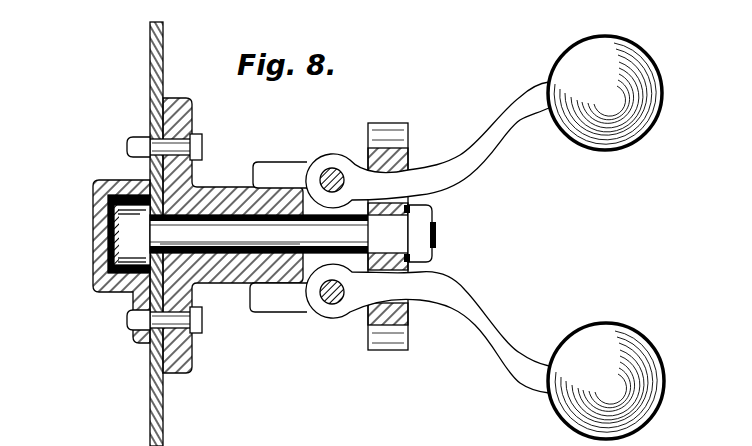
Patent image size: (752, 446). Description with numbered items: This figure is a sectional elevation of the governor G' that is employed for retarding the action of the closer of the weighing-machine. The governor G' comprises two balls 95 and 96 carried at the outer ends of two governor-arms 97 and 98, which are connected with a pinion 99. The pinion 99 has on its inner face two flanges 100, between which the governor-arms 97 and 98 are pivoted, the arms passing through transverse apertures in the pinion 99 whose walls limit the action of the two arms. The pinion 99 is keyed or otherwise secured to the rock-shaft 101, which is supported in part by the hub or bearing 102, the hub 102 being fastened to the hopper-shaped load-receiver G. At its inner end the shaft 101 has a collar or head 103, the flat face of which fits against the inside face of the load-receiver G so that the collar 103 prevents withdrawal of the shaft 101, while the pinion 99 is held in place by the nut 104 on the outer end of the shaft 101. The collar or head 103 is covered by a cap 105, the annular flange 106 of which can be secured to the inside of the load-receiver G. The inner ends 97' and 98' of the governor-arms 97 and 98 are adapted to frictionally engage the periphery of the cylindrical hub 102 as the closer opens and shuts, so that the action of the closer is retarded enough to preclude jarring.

The load-receiver G is at (138, 234).
The governor G' is at (467, 210).
The ball 95 is at (605, 93).
The ball 96 is at (606, 381).
The governor-arm 97 is at (427, 145).
The inner end of governor-arm 97' is at (280, 162).
The governor-arm 98 is at (427, 328).
The inner end of governor-arm 98' is at (279, 318).
The pinion 99 is at (385, 340).
The flange 100 is at (360, 316).
The rock-shaft 101 is at (249, 248).
The hub or bearing 102 is at (216, 197).
The collar or head 103 is at (130, 233).
The nut 104 is at (434, 258).
The cap 105 is at (94, 214).
The annular flange 106 is at (140, 343).